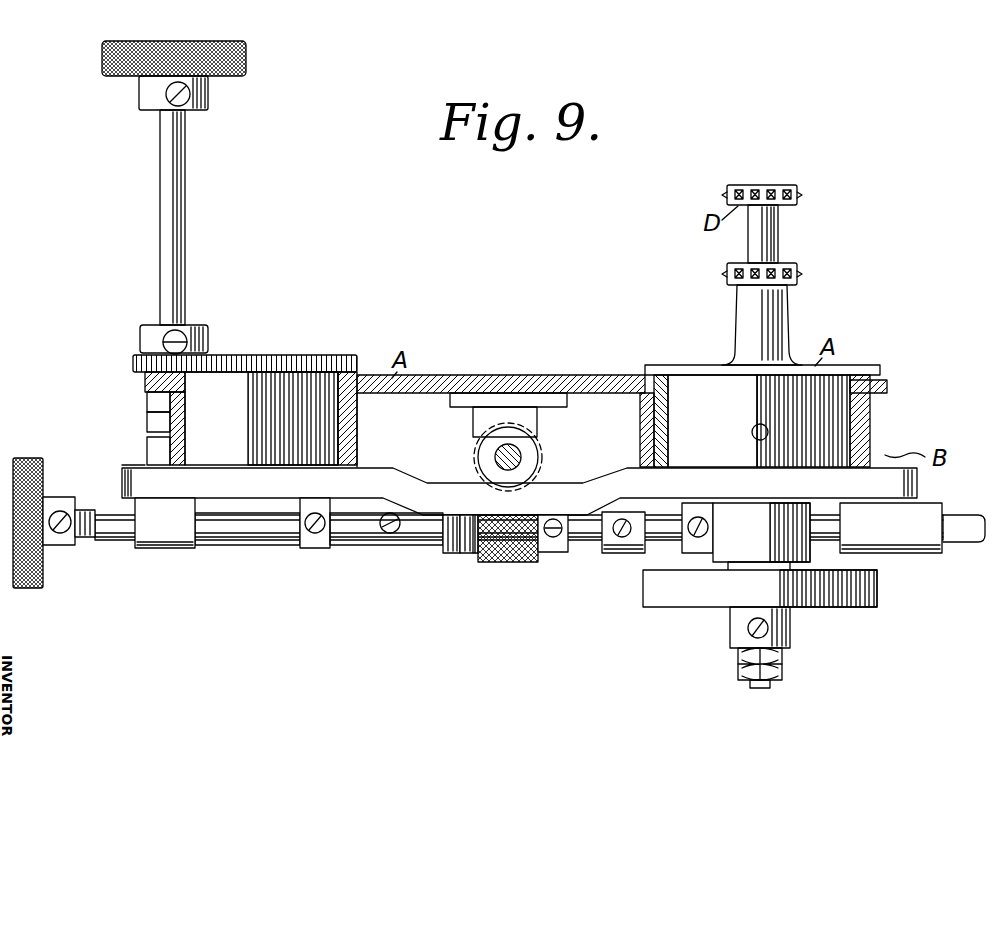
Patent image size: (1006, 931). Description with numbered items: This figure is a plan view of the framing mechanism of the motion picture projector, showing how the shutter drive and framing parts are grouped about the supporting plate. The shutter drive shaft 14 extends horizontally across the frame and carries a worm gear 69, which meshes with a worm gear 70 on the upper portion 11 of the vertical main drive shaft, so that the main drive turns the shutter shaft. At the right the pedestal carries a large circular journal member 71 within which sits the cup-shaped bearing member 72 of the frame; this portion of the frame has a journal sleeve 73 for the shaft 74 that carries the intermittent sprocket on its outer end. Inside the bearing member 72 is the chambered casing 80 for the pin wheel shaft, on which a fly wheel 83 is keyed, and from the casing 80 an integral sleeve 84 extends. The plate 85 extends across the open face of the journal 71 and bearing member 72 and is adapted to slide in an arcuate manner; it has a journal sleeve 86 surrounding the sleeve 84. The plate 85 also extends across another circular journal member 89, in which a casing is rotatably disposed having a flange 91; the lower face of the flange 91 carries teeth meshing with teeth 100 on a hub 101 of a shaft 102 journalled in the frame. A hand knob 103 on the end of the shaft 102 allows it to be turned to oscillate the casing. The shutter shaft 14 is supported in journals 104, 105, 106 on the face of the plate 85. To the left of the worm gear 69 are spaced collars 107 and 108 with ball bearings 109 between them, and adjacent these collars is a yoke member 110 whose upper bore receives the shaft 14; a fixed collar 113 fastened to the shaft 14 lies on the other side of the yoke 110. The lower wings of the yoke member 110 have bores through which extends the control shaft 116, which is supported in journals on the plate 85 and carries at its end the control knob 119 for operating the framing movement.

The upper portion of main drive shaft 11 is at (520, 450).
The shutter drive shaft 14 is at (112, 514).
The worm gear 69 is at (523, 550).
The worm gear 70 is at (545, 458).
The circular journal member 71 is at (872, 432).
The cup-shaped bearing member 72 is at (803, 421).
The journal sleeve 73 is at (745, 322).
The shaft 74 is at (772, 240).
The casing 80 is at (762, 416).
The fly wheel 83 is at (833, 606).
The sleeve 84 is at (735, 570).
The plate 85 is at (424, 490).
The journal sleeve 86 is at (746, 537).
The circular journal member 89 is at (185, 444).
The flange 91 is at (271, 418).
The teeth 100 is at (133, 366).
The hub 101 is at (208, 337).
The shaft 102 is at (175, 228).
The hand knob 103 is at (158, 102).
The journal 104 is at (905, 554).
The journal 105 is at (622, 554).
The journal 106 is at (165, 548).
The collar 107 is at (474, 556).
The collar 108 is at (452, 555).
The ball bearings 109 is at (466, 556).
The yoke member 110 is at (378, 546).
The fixed collar 113 is at (312, 549).
The control shaft 116 is at (85, 540).
The control knob 119 is at (40, 470).